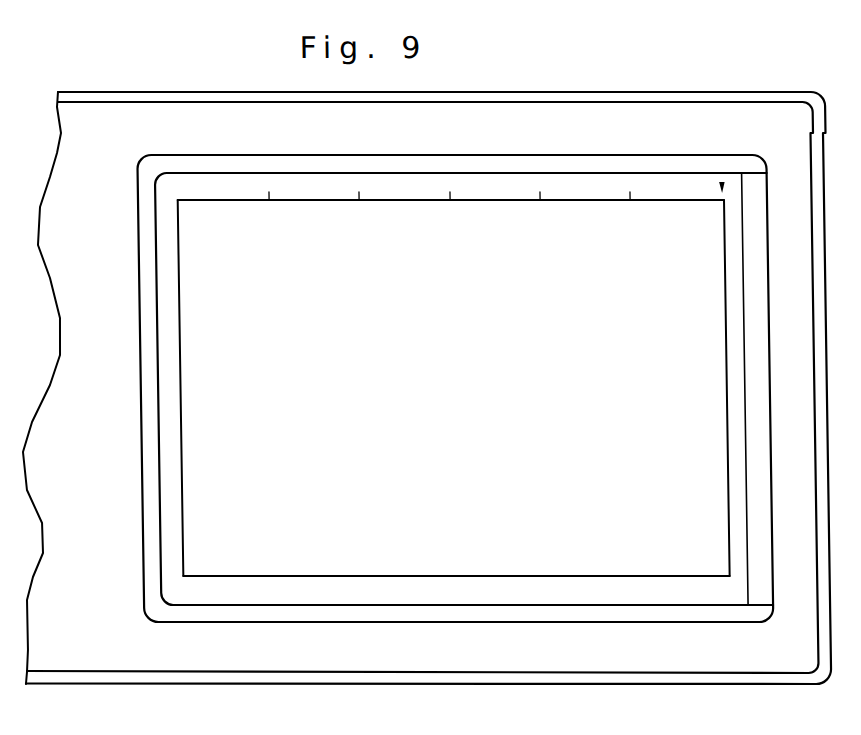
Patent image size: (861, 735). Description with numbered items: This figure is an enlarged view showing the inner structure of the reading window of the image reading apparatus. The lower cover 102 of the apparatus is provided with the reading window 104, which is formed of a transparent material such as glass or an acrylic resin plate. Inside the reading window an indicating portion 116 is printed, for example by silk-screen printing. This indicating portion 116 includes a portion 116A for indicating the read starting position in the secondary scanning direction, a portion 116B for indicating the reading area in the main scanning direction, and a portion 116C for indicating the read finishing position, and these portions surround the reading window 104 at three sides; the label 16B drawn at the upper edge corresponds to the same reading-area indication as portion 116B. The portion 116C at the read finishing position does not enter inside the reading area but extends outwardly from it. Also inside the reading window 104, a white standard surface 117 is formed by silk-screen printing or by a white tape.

The lower cover 102 is at (425, 347).
The reading window 104 is at (411, 388).
The indicating portion 116 is at (448, 380).
The portion for indicating a read starting position 116A is at (663, 388).
The portion for indicating a reading area 116B is at (455, 540).
The top edge of indicating portion 16B is at (451, 231).
The portion for indicating a read finishing position 116C is at (207, 389).
The white standard surface 117 is at (686, 389).